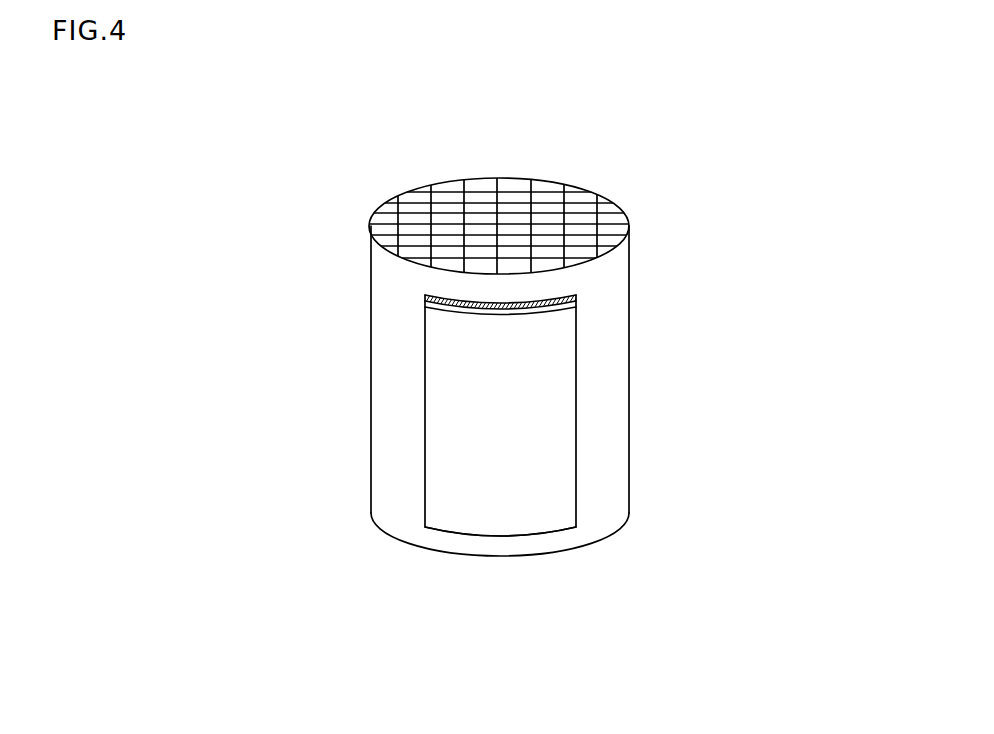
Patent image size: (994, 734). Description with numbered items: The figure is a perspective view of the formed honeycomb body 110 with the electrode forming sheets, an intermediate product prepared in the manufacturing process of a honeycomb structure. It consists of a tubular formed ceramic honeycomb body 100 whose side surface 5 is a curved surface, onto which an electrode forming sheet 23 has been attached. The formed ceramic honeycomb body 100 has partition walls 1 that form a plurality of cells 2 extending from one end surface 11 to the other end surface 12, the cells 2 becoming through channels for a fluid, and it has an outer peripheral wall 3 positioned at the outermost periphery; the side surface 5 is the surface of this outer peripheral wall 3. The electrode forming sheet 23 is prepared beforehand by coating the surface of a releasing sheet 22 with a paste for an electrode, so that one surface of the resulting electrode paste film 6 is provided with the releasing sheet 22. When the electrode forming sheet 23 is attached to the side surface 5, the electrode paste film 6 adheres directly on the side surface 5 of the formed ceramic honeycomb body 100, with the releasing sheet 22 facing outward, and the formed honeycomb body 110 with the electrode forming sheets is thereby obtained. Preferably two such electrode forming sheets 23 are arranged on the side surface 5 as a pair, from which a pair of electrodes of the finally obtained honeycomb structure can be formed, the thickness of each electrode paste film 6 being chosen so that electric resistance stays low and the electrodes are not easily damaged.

The formed honeycomb body with electrode forming sheets 110 is at (838, 56).
The formed ceramic honeycomb body 100 is at (371, 415).
The partition walls 1 is at (372, 242).
The cells 2 is at (411, 197).
The one end surface 11 is at (385, 212).
The other end surface 12 is at (622, 527).
The outer peripheral wall 3 is at (620, 330).
The side surface 5 is at (615, 408).
The electrode paste film 6 is at (535, 302).
The releasing sheet 22 is at (487, 520).
The electrode forming sheet 23 is at (581, 480).